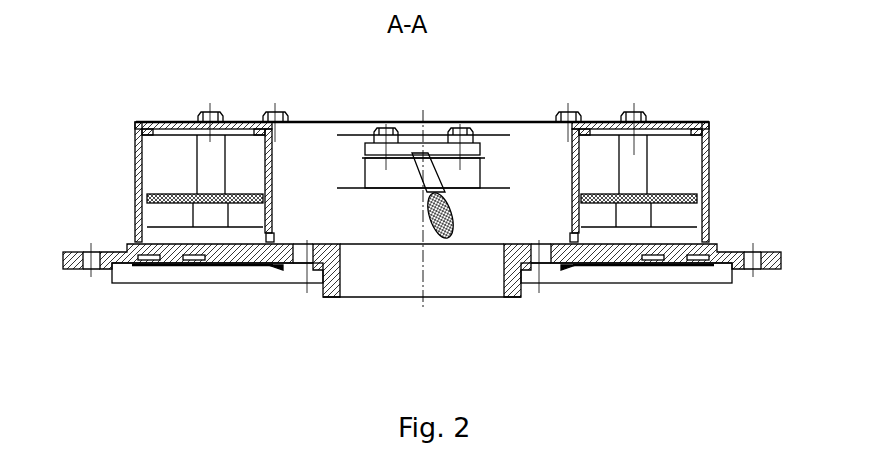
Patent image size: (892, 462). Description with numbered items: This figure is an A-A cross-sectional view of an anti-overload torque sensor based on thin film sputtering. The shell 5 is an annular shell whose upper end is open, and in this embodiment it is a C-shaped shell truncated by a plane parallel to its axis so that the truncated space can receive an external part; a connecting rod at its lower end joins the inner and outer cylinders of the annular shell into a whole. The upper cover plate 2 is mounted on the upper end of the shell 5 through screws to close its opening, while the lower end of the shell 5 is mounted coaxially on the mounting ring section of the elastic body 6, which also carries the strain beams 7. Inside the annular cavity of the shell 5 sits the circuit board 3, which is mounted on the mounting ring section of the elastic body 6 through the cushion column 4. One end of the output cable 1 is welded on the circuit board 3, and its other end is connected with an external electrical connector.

The output cable 1 is at (505, 28).
The upper cover plate 2 is at (523, 28).
The circuit board 3 is at (598, 28).
The cushion column 4 is at (642, 28).
The shell 5 is at (667, 28).
The elastic body 6 is at (743, 28).
The strain beams 7 is at (673, 334).